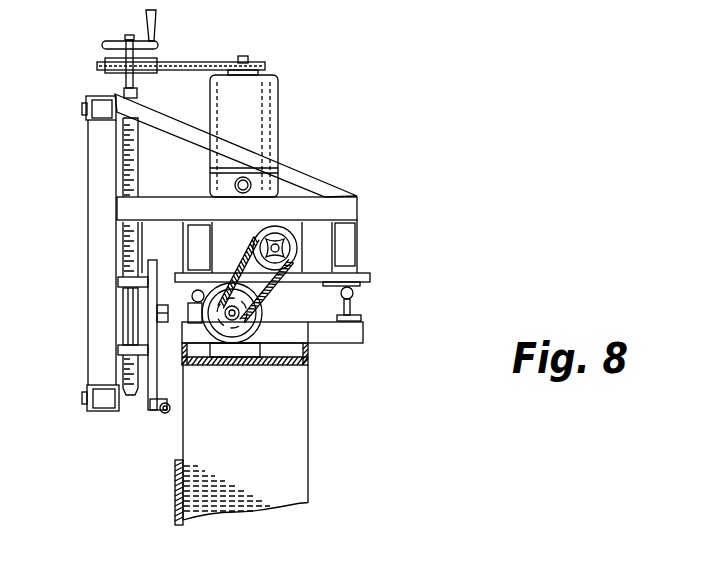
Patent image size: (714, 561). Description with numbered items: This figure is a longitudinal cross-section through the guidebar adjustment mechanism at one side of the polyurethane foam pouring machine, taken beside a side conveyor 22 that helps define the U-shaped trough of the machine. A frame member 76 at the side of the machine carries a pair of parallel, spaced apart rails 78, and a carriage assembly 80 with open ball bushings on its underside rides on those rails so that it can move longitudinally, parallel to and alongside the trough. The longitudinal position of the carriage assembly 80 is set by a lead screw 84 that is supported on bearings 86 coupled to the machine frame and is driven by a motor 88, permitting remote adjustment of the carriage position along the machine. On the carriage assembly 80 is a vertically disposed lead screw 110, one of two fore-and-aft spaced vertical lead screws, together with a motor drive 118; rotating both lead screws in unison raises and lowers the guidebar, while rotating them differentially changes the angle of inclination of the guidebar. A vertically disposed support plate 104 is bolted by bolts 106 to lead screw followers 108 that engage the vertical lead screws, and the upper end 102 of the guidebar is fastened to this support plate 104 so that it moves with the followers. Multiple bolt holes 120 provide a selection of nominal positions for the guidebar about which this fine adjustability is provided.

The side conveyor 22 is at (174, 477).
The frame member 76 is at (243, 367).
The rail 78 is at (186, 291).
The carriage assembly 80 is at (93, 181).
The lead screw 84 is at (277, 238).
The bearing 86 is at (257, 242).
The motor 88 is at (263, 313).
The upper end of the guidebar 102 is at (170, 413).
The support plate 104 is at (158, 387).
The bolt 106 is at (157, 313).
The lead screw follower 108 is at (128, 352).
The lead screw 110 is at (142, 180).
The motor drive 118 is at (272, 100).
The bolt hole 120 is at (147, 283).